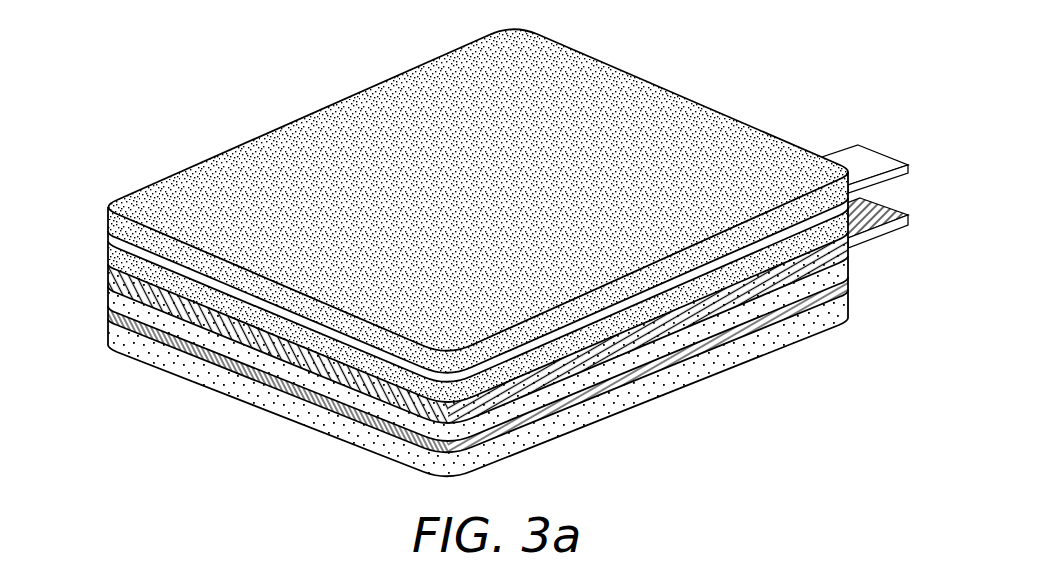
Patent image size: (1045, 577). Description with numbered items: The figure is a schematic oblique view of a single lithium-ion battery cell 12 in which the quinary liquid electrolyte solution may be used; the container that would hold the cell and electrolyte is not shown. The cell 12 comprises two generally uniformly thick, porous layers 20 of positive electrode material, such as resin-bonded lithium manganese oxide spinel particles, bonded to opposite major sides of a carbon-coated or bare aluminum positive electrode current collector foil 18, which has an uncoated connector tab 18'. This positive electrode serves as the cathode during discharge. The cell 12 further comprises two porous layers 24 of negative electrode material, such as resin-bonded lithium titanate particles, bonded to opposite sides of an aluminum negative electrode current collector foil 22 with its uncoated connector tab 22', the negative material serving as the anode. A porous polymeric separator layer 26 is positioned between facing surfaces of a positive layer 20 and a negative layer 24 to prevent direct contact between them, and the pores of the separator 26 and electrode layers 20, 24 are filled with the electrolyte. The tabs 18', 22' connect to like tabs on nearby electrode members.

The lithium-ion battery cell 12 is at (797, 66).
The positive electrode current collector foil 18 is at (441, 295).
The positive electrode connector tab 18' is at (869, 133).
The layer of positive electrode material 20 is at (190, 182).
The negative electrode current collector foil 22 is at (452, 364).
The negative electrode connector tab 22' is at (875, 187).
The layer of negative electrode material 24 is at (125, 307).
The porous polymeric separator layer 26 is at (123, 283).